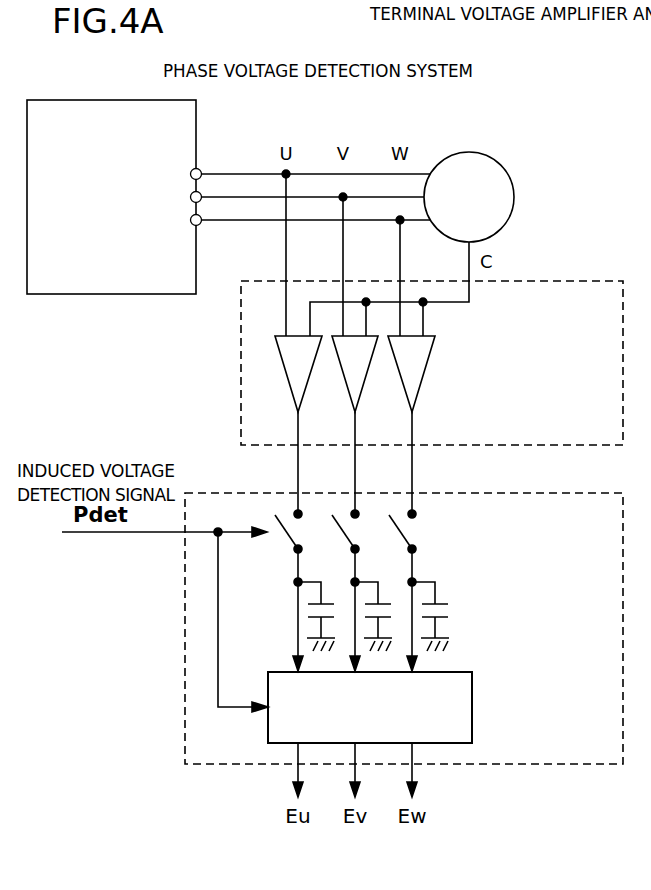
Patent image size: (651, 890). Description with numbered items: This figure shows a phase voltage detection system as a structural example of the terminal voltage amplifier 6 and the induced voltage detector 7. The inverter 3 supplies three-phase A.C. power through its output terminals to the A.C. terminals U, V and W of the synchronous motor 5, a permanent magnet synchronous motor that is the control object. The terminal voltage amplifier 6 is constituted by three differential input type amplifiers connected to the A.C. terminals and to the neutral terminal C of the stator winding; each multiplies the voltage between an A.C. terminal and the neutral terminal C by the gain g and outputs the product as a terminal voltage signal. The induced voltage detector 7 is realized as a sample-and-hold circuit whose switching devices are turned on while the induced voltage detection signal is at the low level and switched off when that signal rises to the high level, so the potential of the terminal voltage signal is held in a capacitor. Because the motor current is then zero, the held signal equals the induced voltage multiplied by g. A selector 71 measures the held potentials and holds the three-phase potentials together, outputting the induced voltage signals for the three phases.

The inverter 3 is at (196, 133).
The synchronous motor 5 is at (467, 152).
The terminal voltage amplifier 6 is at (572, 279).
The induced voltage detector 7 is at (342, 654).
The selector 71 is at (472, 708).